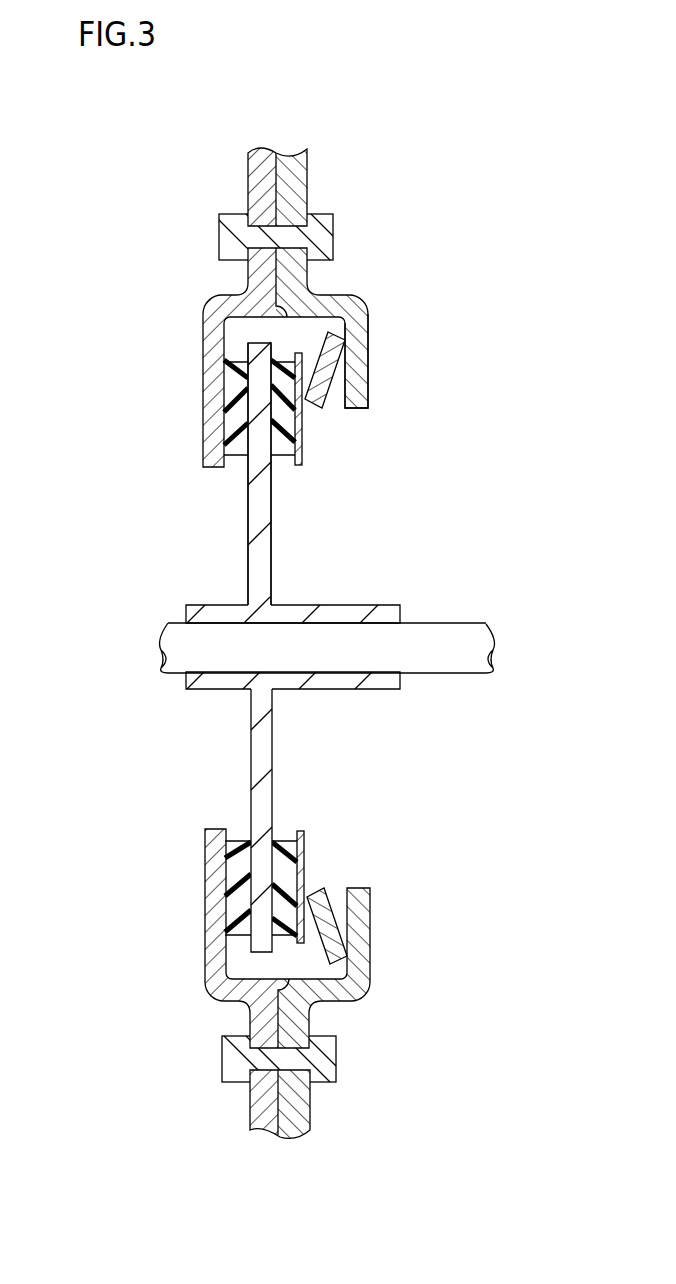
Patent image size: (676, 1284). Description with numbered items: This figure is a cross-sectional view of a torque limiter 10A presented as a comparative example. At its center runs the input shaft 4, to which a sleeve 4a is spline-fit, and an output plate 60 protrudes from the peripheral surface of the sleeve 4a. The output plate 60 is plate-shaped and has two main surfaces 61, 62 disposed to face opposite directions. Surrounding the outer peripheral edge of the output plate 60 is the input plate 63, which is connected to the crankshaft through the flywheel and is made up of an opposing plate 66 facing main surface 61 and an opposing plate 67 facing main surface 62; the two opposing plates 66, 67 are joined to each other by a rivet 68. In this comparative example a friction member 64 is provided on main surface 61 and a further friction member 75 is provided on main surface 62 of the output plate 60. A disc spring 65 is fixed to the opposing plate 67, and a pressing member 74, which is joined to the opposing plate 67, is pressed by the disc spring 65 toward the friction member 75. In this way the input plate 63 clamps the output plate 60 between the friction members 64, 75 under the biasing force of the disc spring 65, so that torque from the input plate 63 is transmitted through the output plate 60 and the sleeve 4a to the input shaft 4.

The torque limiter 10A is at (277, 103).
The input plate 63 is at (330, 164).
The rivet 68 is at (324, 236).
The opposing plate 66 is at (212, 348).
The opposing plate 67 is at (357, 350).
The disc spring 65 is at (318, 380).
The friction member 64 is at (240, 392).
The pressing member 74 is at (300, 417).
The friction member 75 is at (285, 442).
The output plate 60 is at (262, 530).
The main surface 61 is at (248, 493).
The main surface 62 is at (271, 493).
The sleeve 4a is at (356, 613).
The input shaft 4 is at (448, 640).